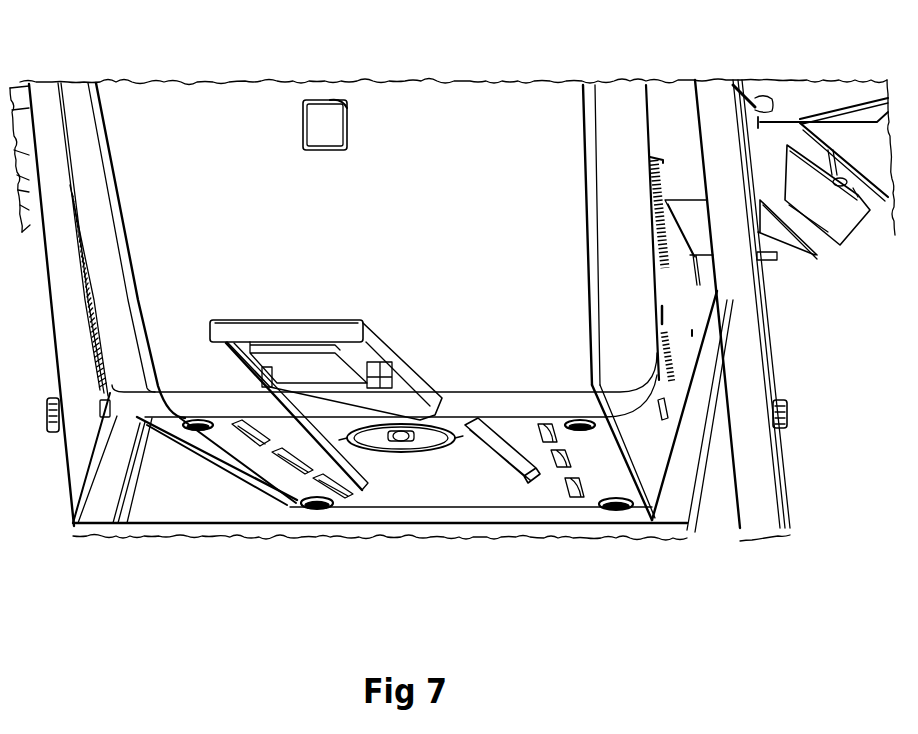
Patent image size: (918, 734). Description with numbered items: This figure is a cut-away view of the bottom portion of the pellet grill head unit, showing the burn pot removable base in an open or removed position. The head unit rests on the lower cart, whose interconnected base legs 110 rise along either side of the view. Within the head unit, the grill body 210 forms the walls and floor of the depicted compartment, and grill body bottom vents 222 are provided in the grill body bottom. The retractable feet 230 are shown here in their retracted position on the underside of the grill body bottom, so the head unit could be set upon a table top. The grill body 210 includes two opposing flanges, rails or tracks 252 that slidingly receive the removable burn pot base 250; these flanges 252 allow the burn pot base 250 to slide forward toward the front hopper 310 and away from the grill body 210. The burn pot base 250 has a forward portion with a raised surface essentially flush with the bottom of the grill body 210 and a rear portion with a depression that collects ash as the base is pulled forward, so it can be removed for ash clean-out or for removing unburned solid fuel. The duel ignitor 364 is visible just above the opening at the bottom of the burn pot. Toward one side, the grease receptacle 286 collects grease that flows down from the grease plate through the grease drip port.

The base legs 110 is at (748, 400).
The grill body 210 is at (668, 312).
The grill body bottom vents 222 is at (247, 427).
The retractable feet 230 is at (197, 430).
The burn pot base 250 is at (332, 410).
The flanges, rails or tracks 252 is at (340, 460).
The grease receptacle 286 is at (682, 127).
The front hopper 310 is at (357, 228).
The duel ignitor 364 is at (436, 456).